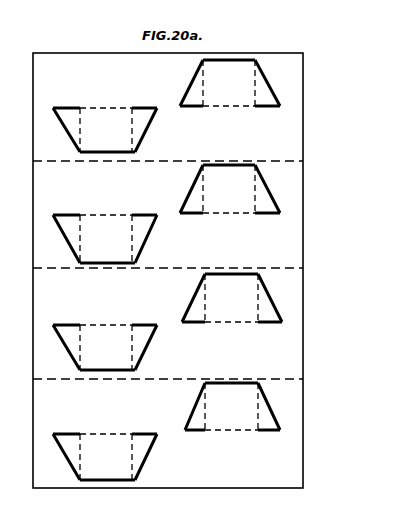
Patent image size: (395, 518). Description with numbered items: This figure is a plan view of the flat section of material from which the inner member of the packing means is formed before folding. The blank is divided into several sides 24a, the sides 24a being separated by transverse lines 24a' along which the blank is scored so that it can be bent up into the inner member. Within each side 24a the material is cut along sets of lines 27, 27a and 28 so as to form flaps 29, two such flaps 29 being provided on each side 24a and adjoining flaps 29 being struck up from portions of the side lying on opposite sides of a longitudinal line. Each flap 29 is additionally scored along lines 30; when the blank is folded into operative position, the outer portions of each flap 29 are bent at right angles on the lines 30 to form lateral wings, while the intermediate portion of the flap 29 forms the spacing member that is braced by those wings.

The side 24a is at (195, 270).
The fold lines 24a' is at (168, 270).
The cut line 27 is at (145, 108).
The cut line 27a is at (150, 128).
The cut line 28 is at (117, 152).
The flap 29 is at (240, 192).
The score line 30 is at (121, 238).